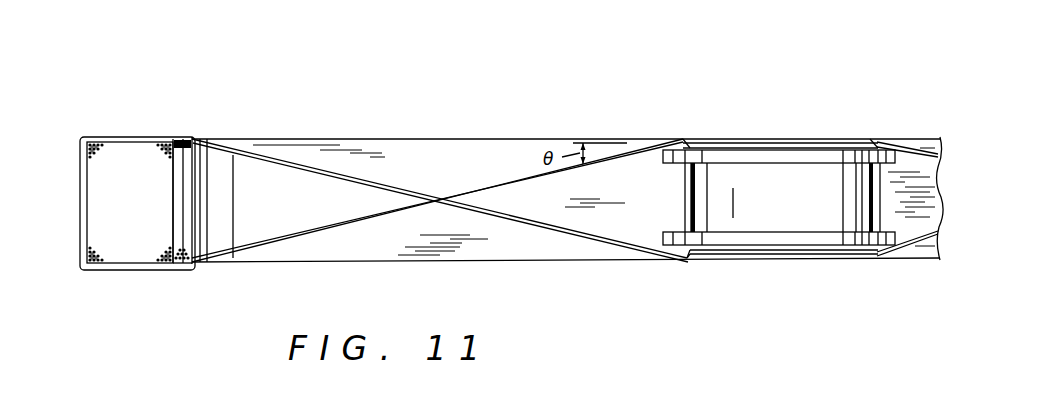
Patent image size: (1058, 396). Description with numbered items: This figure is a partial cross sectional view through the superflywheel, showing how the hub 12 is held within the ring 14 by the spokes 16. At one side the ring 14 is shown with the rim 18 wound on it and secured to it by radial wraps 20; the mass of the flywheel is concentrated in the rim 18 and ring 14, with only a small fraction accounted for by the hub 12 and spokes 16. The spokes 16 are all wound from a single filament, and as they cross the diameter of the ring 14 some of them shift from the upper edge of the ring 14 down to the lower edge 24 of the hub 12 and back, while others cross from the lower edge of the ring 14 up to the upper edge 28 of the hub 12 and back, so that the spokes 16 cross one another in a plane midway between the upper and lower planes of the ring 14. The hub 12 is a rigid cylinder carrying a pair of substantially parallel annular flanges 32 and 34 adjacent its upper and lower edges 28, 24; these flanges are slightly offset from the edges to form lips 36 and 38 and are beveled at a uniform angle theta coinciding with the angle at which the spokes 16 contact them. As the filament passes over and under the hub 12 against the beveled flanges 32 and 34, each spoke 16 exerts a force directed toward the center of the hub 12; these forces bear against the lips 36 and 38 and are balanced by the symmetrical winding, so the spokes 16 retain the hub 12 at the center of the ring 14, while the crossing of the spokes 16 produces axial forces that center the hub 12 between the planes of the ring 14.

The hub 12 is at (753, 196).
The ring 14 is at (180, 178).
The spokes 16 is at (172, 158).
The rim 18 is at (98, 140).
The radial wraps 20 is at (140, 136).
The lower edge of the hub 24 is at (818, 256).
The upper edge of the hub 28 is at (722, 138).
The upper annular flange 32 is at (840, 158).
The lower annular flange 34 is at (734, 239).
The lip 36 is at (866, 138).
The lip 38 is at (693, 259).